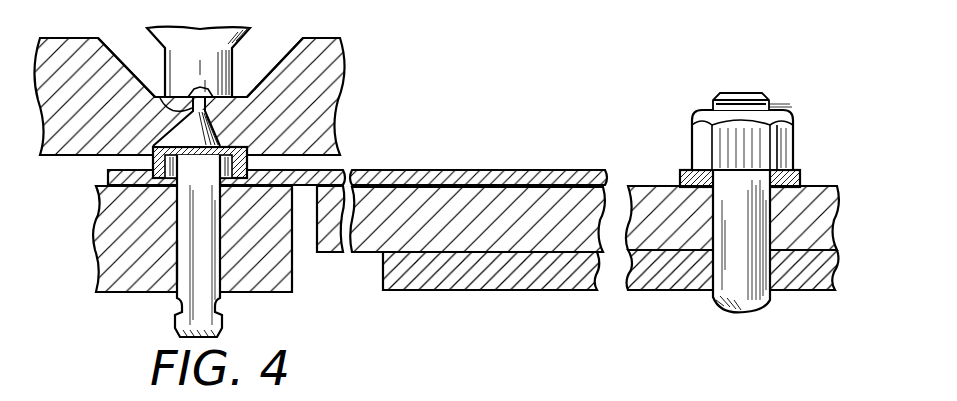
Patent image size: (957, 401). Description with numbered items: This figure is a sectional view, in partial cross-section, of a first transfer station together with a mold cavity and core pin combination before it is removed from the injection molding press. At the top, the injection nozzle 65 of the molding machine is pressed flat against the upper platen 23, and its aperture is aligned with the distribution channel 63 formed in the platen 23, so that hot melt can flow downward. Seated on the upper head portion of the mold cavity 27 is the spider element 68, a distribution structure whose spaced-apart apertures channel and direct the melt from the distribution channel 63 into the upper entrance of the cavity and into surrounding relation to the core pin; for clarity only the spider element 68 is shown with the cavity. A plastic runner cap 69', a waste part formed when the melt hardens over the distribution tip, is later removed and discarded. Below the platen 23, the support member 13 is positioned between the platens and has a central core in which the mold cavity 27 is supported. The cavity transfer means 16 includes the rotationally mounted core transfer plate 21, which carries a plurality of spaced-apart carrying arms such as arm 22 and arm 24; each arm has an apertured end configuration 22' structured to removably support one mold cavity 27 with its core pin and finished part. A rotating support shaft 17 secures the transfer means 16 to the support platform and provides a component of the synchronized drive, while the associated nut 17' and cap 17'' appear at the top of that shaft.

The support member 13 is at (292, 288).
The cavity transfer means 16 is at (505, 292).
The rotating support shaft 17 is at (724, 254).
The nut 17' is at (769, 137).
The cap 17'' is at (770, 86).
The core transfer plate 21 is at (372, 253).
The carrying arm 22 is at (478, 159).
The apertured end configuration 22' is at (226, 198).
The upper platen 23 is at (341, 84).
The carrying arm 24 is at (221, 290).
The mold cavity 27 is at (178, 252).
The distribution channel 63 is at (163, 95).
The injection nozzle 65 is at (163, 50).
The spider element 68 is at (248, 150).
The plastic runner cap 69' is at (270, 67).